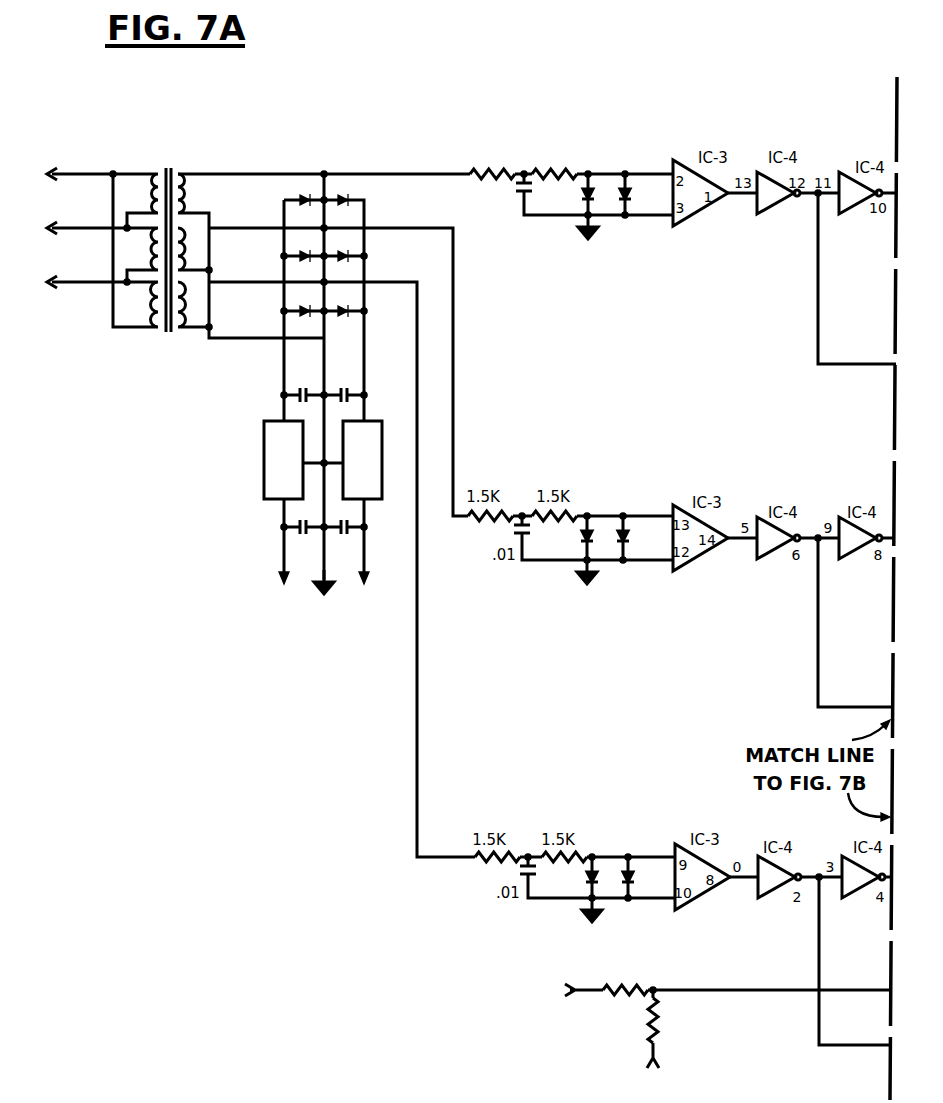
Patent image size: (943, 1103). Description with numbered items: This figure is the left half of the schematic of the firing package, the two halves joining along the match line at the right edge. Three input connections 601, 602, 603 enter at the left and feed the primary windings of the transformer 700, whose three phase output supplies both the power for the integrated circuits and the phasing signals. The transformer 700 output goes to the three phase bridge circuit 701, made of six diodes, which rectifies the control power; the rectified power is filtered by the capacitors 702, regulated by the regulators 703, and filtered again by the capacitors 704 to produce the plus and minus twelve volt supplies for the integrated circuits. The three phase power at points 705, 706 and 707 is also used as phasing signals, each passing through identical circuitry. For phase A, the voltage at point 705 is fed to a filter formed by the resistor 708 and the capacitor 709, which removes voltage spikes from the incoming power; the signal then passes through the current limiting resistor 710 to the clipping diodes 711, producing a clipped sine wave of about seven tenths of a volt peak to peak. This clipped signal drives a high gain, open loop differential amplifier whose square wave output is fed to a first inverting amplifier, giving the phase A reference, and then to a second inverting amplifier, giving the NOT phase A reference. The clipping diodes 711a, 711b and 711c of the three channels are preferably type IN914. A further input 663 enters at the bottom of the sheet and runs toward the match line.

The first input line 601 is at (52, 170).
The second input line 602 is at (52, 232).
The third input line 603 is at (52, 286).
The transformer 700 is at (176, 172).
The three phase bridge circuit 701 is at (305, 195).
The capacitors 702 is at (270, 400).
The regulators 703 is at (263, 467).
The capacitors 704 is at (273, 538).
The point 705 is at (420, 172).
The point 706 is at (453, 393).
The point 707 is at (417, 733).
The resistor 708 is at (491, 180).
The capacitor 709 is at (533, 196).
The current limiting resistor 710 is at (571, 172).
The clipping diodes 711 is at (627, 161).
The clipping diodes 711a is at (629, 206).
The clipping diodes 711b is at (592, 524).
The clipping diodes 711c is at (634, 866).
The control input line 663 is at (567, 985).